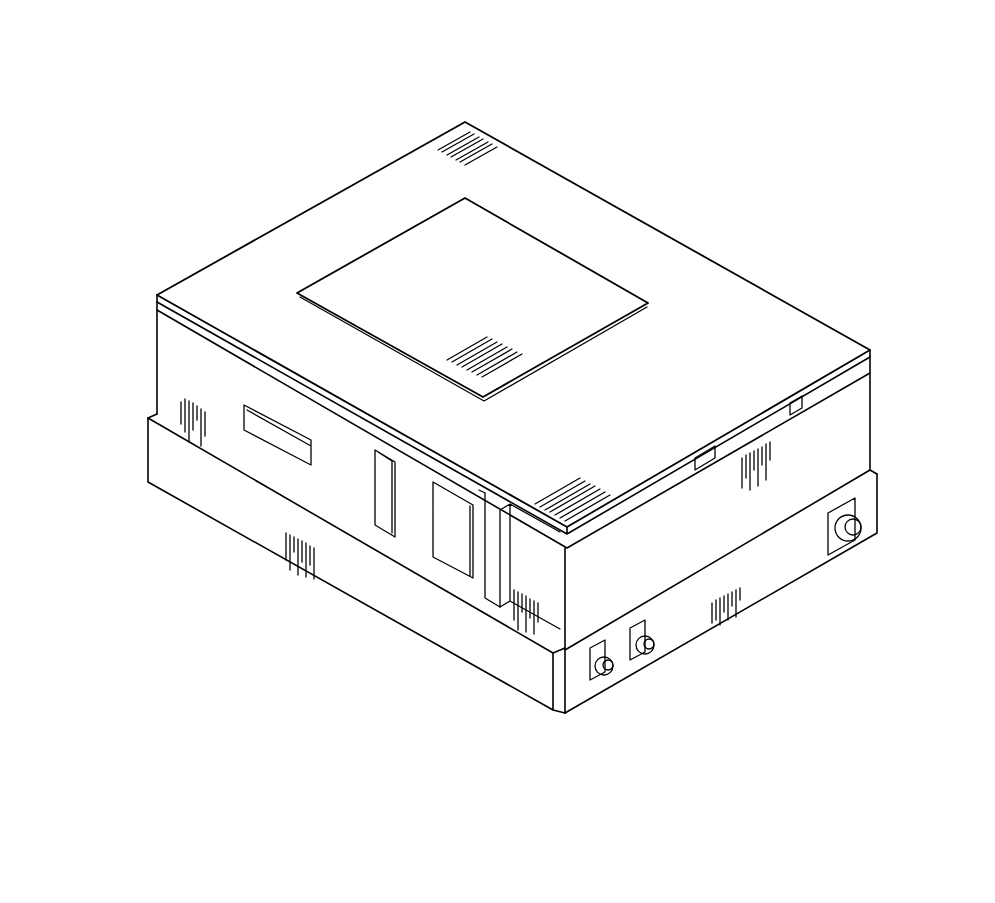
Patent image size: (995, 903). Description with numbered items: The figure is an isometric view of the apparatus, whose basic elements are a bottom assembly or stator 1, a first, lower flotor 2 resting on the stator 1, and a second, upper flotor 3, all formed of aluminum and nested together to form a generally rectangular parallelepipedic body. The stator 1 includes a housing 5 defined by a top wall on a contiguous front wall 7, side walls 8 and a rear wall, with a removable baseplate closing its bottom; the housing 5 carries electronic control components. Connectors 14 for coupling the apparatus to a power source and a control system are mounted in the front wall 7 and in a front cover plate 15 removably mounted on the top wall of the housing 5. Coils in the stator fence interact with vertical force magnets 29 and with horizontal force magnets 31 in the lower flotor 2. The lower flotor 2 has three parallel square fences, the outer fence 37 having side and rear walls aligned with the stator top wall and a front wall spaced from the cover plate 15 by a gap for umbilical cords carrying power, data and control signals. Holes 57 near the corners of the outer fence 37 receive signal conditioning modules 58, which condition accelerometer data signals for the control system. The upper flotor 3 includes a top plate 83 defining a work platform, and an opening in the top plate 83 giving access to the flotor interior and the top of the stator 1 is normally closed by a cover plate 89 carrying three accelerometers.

The stator 1 is at (292, 632).
The lower flotor 2 is at (115, 355).
The upper flotor 3 is at (506, 100).
The housing 5 is at (148, 455).
The front wall 7 is at (697, 627).
The side walls 8 is at (385, 613).
The connectors 14 is at (618, 677).
The front cover plate 15 is at (705, 542).
The vertical force magnets 29 is at (387, 475).
The horizontal force magnets 31 is at (270, 425).
The outer fence 37 is at (155, 377).
The holes 57 is at (453, 490).
The signal conditioning modules 58 is at (453, 553).
The top plate 83 is at (698, 400).
The cover plate 89 is at (492, 301).